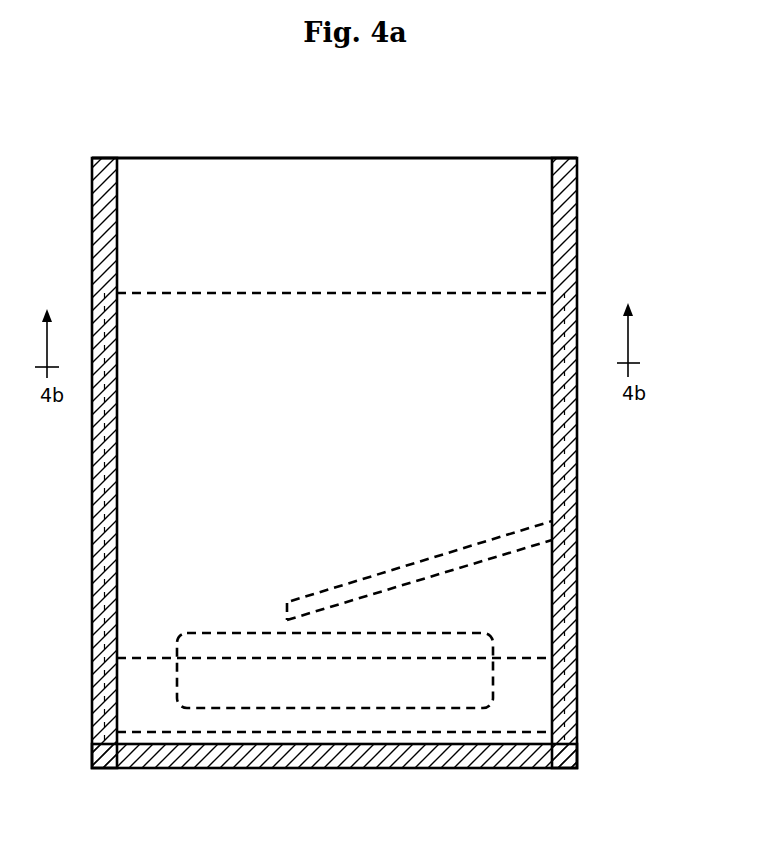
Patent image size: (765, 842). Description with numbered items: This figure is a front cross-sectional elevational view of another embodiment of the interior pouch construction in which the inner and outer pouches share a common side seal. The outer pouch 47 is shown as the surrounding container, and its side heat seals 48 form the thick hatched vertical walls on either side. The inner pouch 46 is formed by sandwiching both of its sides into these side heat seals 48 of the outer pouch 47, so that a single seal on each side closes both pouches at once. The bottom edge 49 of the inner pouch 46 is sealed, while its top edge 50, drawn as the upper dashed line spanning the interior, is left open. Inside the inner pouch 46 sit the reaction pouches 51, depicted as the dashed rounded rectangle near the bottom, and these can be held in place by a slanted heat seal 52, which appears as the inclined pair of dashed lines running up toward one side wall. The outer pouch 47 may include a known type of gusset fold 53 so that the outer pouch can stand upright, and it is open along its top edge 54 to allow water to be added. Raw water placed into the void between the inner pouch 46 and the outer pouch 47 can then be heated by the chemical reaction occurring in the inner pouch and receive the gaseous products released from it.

The inner pouch 46 is at (433, 291).
The outer pouch 47 is at (262, 140).
The side heat seals 48 is at (578, 465).
The bottom edge 49 is at (418, 729).
The top edge 50 is at (177, 295).
The reaction pouches 51 is at (232, 633).
The slanted heat seal 52 is at (352, 583).
The gusset fold 53 is at (404, 657).
The top edge 54 is at (433, 157).